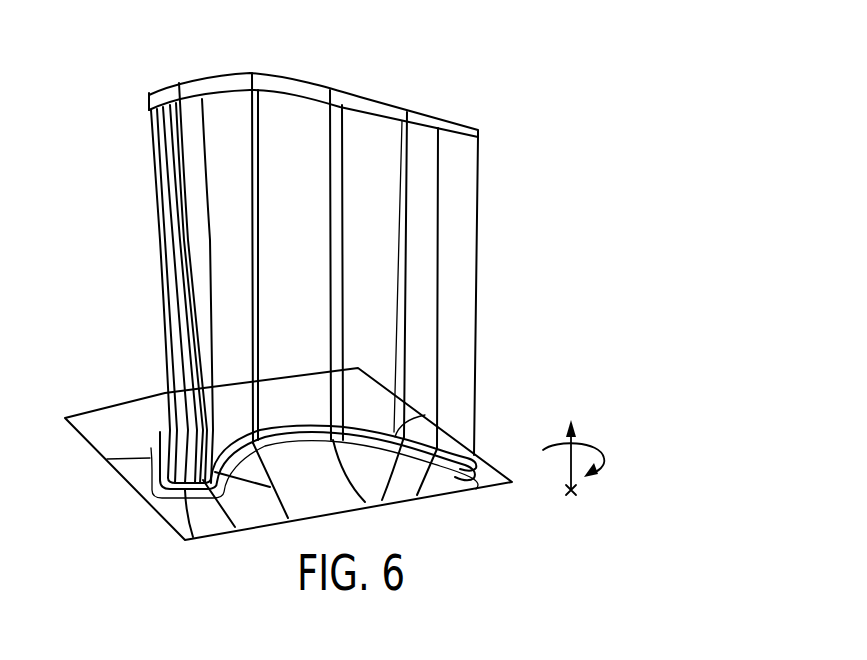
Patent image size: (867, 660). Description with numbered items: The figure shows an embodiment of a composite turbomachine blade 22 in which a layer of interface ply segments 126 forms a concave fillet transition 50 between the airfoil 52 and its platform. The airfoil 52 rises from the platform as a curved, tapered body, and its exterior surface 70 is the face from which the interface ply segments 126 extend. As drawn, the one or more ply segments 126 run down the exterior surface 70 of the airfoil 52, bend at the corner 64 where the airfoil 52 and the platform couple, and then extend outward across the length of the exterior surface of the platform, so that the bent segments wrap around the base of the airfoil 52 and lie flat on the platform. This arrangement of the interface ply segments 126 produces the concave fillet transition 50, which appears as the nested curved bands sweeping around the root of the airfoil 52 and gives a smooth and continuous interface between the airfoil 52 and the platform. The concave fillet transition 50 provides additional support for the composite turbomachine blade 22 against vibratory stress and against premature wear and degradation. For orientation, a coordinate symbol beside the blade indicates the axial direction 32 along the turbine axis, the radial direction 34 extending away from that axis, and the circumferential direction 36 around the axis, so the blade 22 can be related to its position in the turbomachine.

The composite turbomachine blade 22 is at (492, 77).
The axial direction 32 is at (574, 496).
The radial direction 34 is at (570, 462).
The circumferential direction 36 is at (590, 447).
The concave fillet transition 50 is at (295, 433).
The airfoil 52 is at (447, 217).
The corner 64 is at (165, 509).
The exterior surface 70 is at (337, 122).
The interface ply segments 126 is at (258, 515).